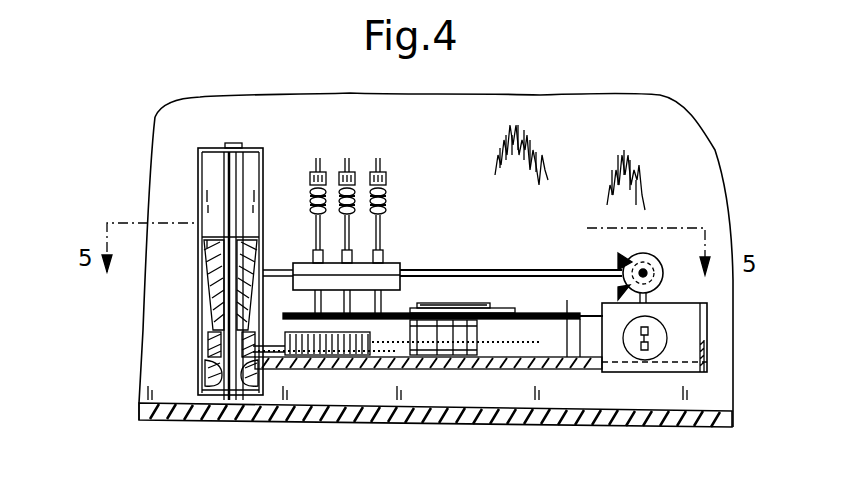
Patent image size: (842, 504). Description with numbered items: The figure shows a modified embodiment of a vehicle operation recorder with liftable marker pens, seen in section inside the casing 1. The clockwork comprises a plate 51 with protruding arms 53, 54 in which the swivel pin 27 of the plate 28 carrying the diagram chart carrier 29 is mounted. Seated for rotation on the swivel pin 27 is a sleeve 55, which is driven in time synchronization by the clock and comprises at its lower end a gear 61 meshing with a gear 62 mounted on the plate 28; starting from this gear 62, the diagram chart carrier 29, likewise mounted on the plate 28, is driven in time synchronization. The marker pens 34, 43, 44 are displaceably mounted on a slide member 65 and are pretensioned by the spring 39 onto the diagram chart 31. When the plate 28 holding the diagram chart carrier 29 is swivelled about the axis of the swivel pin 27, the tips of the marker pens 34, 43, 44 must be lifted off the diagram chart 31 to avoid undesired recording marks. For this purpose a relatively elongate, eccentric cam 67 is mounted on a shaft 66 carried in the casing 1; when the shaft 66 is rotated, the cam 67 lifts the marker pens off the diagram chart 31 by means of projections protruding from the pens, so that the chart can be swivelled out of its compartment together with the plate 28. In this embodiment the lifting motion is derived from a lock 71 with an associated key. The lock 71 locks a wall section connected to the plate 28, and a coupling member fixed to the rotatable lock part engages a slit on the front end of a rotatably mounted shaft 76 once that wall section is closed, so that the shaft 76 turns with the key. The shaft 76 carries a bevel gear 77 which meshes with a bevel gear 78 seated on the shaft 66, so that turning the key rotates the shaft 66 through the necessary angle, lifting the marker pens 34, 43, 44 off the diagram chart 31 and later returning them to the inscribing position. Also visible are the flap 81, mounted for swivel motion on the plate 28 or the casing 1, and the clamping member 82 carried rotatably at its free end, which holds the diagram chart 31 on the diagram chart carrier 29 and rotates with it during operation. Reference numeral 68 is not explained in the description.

The casing 1 is at (473, 420).
The swivel pin 27 is at (197, 373).
The plate 28 is at (567, 300).
The diagram chart carrier 29 is at (435, 330).
The diagram chart 31 is at (580, 325).
The marker pen 34 is at (318, 158).
The spring 39 is at (312, 197).
The marker pen 43 is at (347, 158).
The marker pen 44 is at (380, 160).
The plate 51 is at (197, 188).
The protruding arm 53 is at (200, 147).
The protruding arm 54 is at (182, 423).
The sleeve 55 is at (197, 303).
The gear 61 is at (197, 348).
The gear 62 is at (300, 362).
The slide member 65 is at (350, 182).
The shaft 66 is at (460, 300).
The eccentric cam 67 is at (387, 262).
The pins 68 is at (378, 247).
The lock 71 is at (660, 342).
The shaft 76 is at (652, 302).
The bevel gear 77 is at (662, 280).
The bevel gear 78 is at (622, 262).
The flap 81 is at (512, 318).
The clamping member 82 is at (455, 302).